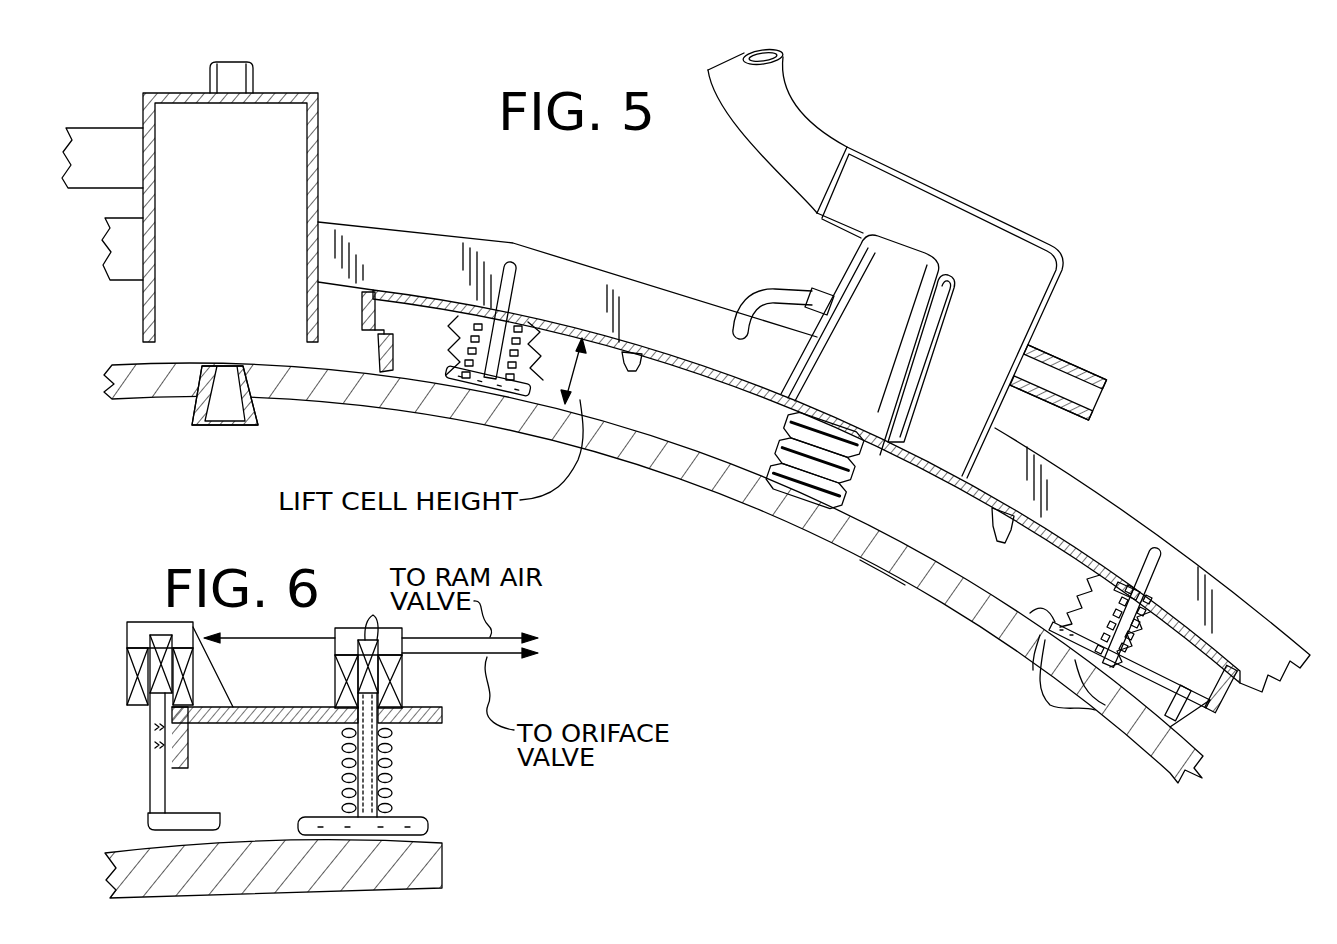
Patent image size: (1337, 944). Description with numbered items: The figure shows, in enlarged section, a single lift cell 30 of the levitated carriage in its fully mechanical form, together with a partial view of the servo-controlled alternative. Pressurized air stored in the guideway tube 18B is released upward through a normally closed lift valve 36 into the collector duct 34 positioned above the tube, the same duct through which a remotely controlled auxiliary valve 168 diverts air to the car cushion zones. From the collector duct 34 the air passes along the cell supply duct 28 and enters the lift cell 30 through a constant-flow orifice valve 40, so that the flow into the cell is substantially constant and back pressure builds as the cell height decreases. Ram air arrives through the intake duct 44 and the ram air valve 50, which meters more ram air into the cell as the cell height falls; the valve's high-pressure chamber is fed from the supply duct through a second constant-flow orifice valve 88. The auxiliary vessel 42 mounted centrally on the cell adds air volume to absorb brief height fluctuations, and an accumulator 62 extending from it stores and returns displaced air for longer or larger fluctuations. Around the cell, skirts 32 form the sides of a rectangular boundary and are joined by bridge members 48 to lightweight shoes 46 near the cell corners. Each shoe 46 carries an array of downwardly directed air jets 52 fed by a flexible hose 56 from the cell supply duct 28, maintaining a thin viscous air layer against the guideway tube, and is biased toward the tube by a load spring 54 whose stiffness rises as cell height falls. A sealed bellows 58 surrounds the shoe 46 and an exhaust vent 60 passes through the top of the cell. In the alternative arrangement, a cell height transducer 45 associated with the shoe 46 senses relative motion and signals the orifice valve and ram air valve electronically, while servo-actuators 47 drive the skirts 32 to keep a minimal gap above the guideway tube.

In FIG. 5, the auxiliary valve 168 is at (254, 72).
In FIG. 5, the collector duct 34 is at (320, 160).
In FIG. 5, the cell supply duct 28 is at (660, 288).
In FIG. 5, the constant-flow orifice valve 88 is at (830, 290).
In FIG. 5, the ram air valve 50 is at (933, 235).
In FIG. 5, the intake duct 44 is at (810, 107).
In FIG. 5, the auxiliary vessel 42 is at (982, 383).
In FIG. 5, the accumulator 62 is at (1066, 354).
In FIG. 5, the lift valve 36 is at (190, 421).
In FIG. 5, the skirt 32 is at (380, 370).
In FIG. 6, the skirt 32 is at (150, 792).
In FIG. 5, the shoe 46 is at (442, 393).
In FIG. 5, the constant-flow orifice valve 40 is at (640, 371).
In FIG. 5, the lift cell 30 is at (910, 520).
In FIG. 6, the lift cell 30 is at (280, 784).
In FIG. 5, the flexible hose 56 is at (1162, 556).
In FIG. 5, the exhaust vent 60 is at (1125, 583).
In FIG. 5, the load spring 54 is at (1050, 626).
In FIG. 5, the bellows 58 is at (1138, 640).
In FIG. 5, the air jet 52 is at (1062, 700).
In FIG. 5, the bridge member 48 is at (1120, 712).
In FIG. 5, the guideway tube 18B is at (883, 575).
In FIG. 6, the servo-actuator 47 is at (127, 680).
In FIG. 6, the cell height transducer 45 is at (402, 692).